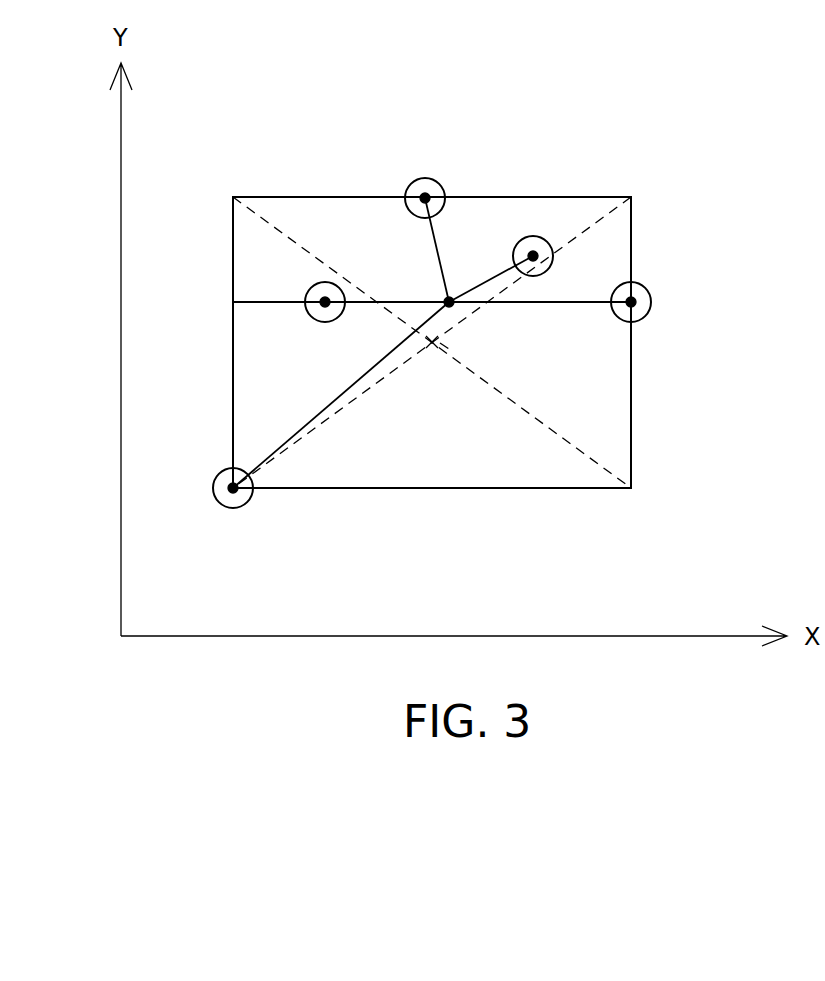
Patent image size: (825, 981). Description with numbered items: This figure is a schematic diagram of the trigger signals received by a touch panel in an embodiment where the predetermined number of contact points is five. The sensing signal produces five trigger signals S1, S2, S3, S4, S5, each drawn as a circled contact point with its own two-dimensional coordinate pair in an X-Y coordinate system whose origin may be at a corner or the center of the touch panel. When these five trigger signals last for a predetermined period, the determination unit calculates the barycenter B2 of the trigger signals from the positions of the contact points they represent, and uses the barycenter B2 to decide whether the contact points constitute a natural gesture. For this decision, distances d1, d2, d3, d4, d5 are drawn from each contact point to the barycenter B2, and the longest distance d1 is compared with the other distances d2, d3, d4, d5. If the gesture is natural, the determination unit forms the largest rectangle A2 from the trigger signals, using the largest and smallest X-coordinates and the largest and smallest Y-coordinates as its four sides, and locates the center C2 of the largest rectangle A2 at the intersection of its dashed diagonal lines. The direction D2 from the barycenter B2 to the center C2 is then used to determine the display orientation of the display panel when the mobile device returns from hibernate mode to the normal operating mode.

The largest rectangle A2 is at (625, 197).
The trigger signal S1 is at (216, 482).
The trigger signal S2 is at (325, 302).
The trigger signal S3 is at (412, 185).
The trigger signal S4 is at (533, 250).
The trigger signal S5 is at (636, 300).
The distance d1 is at (333, 400).
The distance d2 is at (402, 301).
The distance d3 is at (438, 238).
The distance d4 is at (487, 281).
The distance d5 is at (572, 308).
The barycenter B2 is at (455, 308).
The center C2 is at (433, 347).
The direction D2 is at (445, 344).